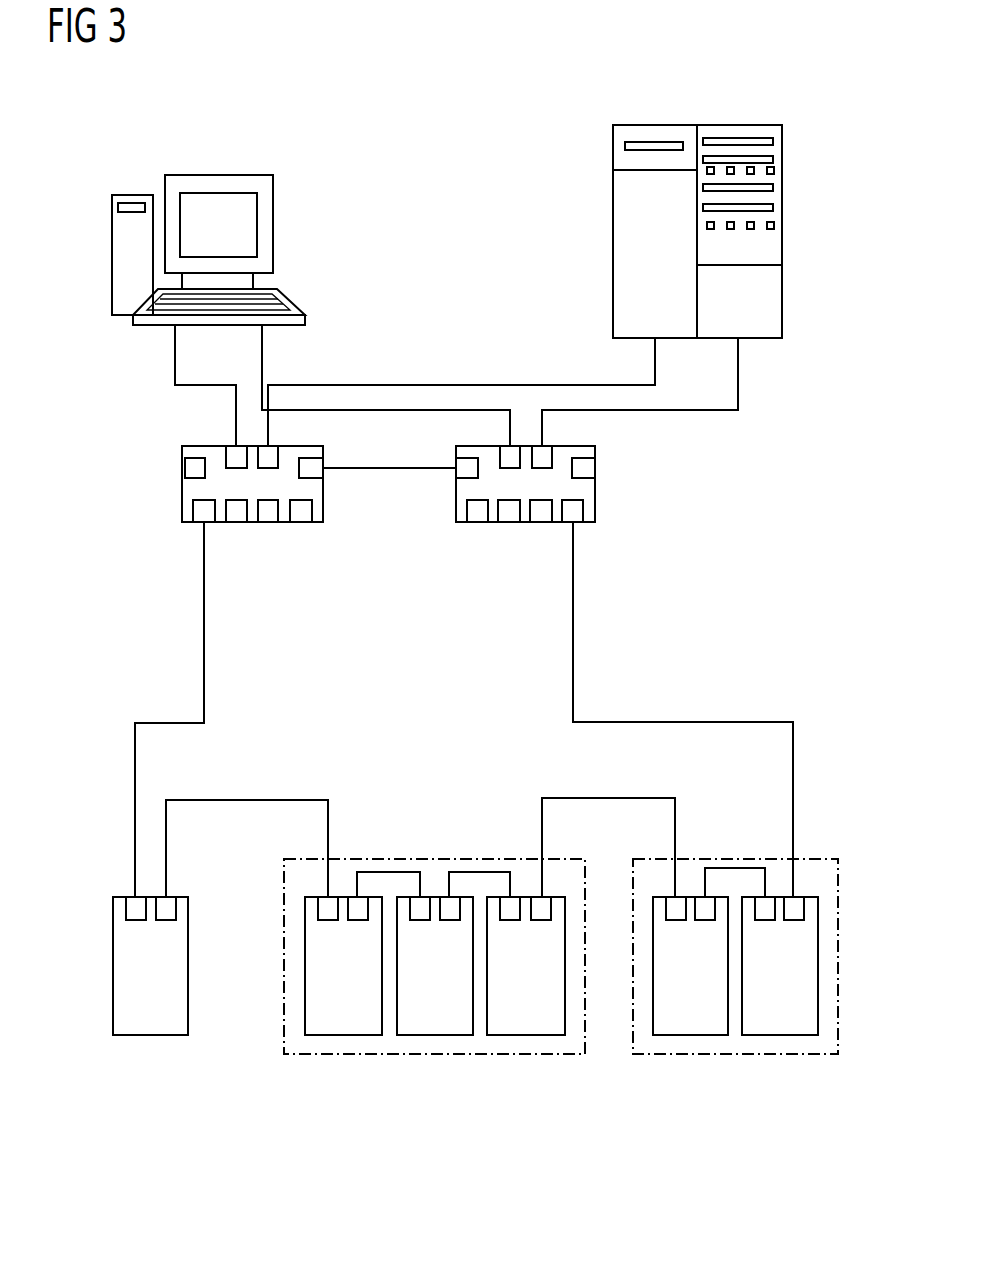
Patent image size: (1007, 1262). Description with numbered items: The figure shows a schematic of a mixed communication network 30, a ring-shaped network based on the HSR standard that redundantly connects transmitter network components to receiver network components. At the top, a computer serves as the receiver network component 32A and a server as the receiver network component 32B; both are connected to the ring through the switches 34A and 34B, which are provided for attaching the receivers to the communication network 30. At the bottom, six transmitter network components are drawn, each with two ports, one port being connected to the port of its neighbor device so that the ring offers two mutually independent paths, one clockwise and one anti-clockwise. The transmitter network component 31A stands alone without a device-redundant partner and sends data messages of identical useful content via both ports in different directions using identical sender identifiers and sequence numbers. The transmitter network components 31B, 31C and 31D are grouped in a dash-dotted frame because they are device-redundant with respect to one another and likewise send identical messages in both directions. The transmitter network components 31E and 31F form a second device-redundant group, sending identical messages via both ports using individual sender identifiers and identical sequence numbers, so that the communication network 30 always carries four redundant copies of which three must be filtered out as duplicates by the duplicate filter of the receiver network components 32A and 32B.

The mixed communication network 30 is at (810, 404).
The receiver network component 32A is at (218, 175).
The receiver network component 32B is at (697, 125).
The switch 34A is at (182, 495).
The switch 34B is at (456, 495).
The transmitter network component 31A is at (145, 1035).
The transmitter network component 31B is at (343, 1035).
The transmitter network component 31C is at (435, 1035).
The transmitter network component 31D is at (526, 1035).
The transmitter network component 31E is at (690, 1035).
The transmitter network component 31F is at (780, 1035).